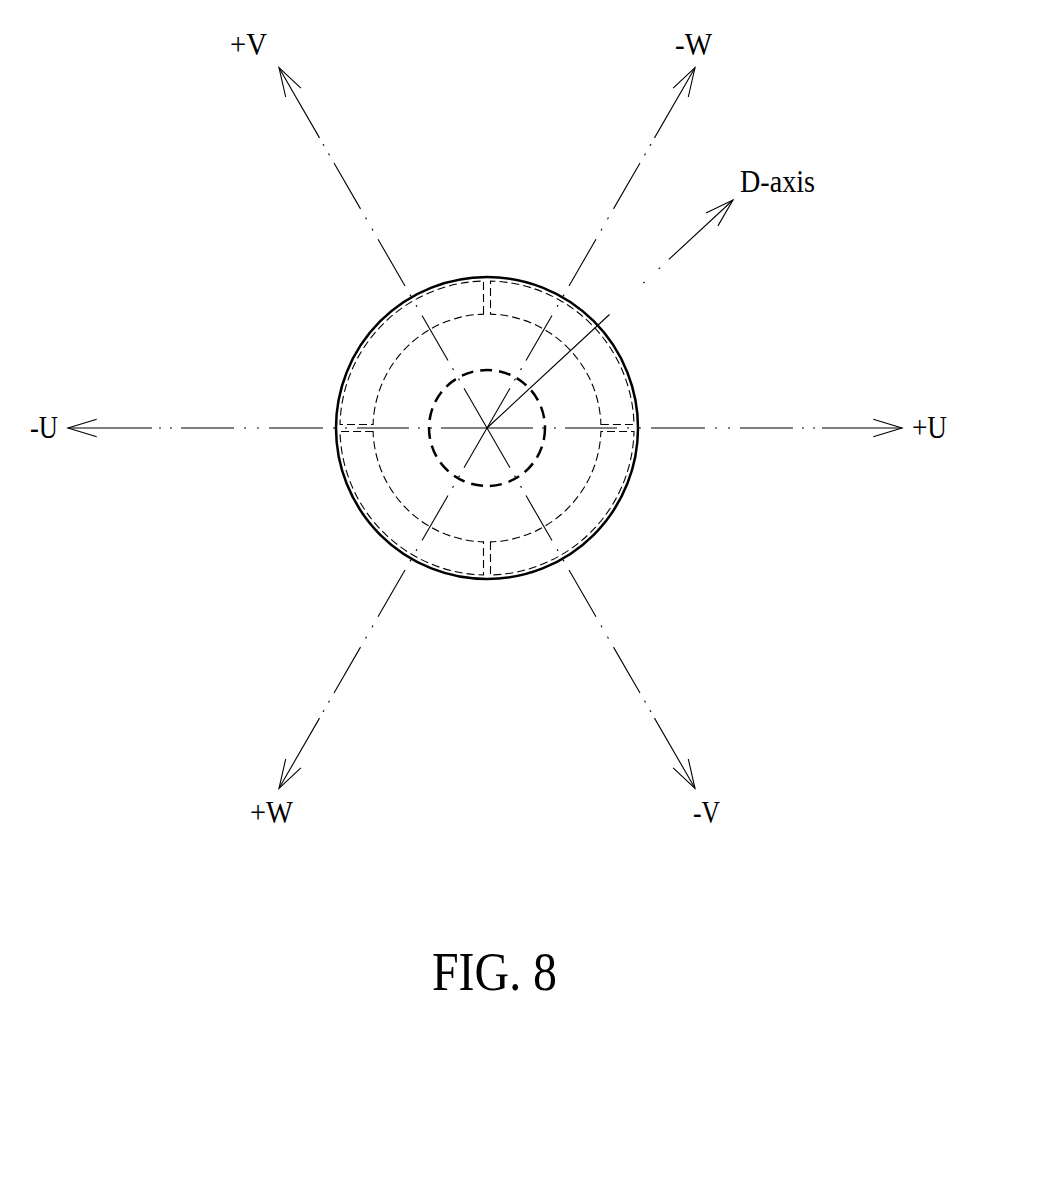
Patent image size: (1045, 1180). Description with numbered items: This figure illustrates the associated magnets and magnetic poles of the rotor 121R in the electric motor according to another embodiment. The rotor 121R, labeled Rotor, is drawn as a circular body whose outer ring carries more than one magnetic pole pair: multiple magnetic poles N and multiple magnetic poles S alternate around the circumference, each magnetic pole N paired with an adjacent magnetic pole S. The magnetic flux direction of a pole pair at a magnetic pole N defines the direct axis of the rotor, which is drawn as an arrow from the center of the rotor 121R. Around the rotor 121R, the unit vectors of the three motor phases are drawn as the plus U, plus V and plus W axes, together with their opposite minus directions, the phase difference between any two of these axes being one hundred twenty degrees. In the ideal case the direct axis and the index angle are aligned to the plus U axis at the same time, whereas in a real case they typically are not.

The rotor 121R is at (487, 579).
The rotor Rotor is at (487, 450).
The magnetic pole N is at (487, 428).
The magnetic pole S is at (487, 428).